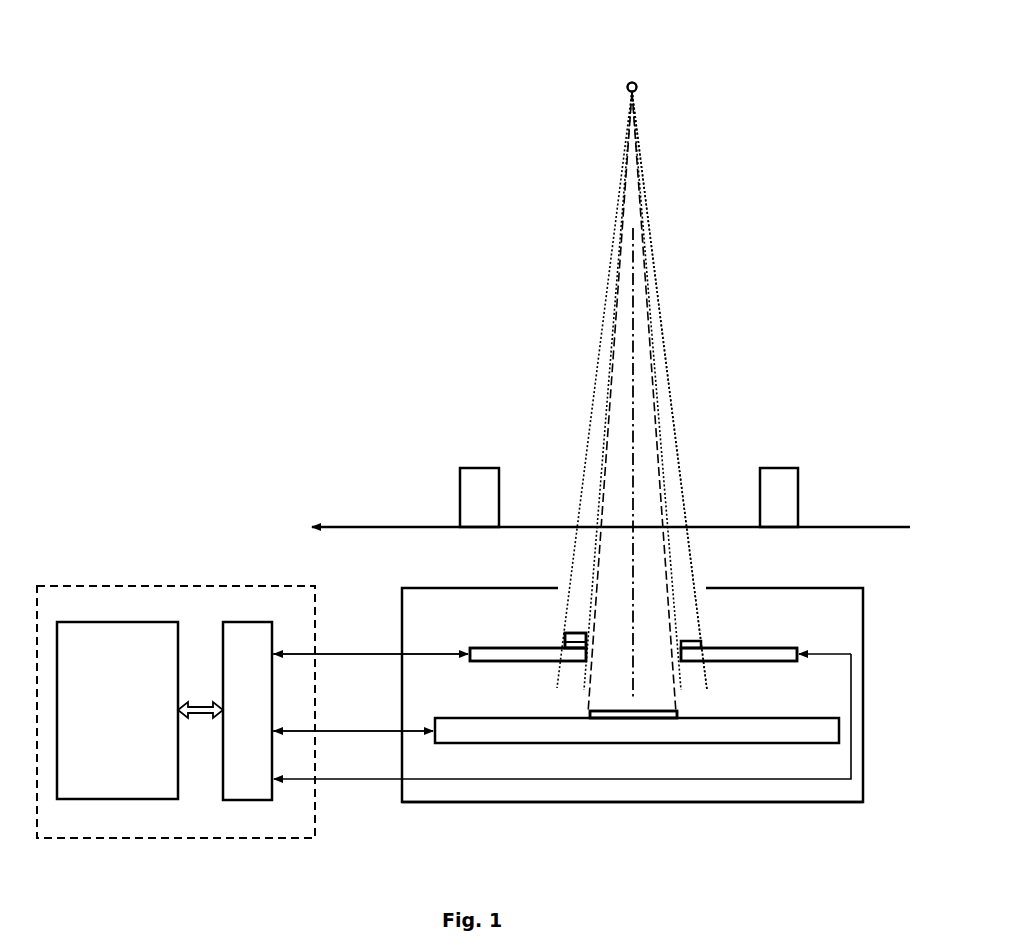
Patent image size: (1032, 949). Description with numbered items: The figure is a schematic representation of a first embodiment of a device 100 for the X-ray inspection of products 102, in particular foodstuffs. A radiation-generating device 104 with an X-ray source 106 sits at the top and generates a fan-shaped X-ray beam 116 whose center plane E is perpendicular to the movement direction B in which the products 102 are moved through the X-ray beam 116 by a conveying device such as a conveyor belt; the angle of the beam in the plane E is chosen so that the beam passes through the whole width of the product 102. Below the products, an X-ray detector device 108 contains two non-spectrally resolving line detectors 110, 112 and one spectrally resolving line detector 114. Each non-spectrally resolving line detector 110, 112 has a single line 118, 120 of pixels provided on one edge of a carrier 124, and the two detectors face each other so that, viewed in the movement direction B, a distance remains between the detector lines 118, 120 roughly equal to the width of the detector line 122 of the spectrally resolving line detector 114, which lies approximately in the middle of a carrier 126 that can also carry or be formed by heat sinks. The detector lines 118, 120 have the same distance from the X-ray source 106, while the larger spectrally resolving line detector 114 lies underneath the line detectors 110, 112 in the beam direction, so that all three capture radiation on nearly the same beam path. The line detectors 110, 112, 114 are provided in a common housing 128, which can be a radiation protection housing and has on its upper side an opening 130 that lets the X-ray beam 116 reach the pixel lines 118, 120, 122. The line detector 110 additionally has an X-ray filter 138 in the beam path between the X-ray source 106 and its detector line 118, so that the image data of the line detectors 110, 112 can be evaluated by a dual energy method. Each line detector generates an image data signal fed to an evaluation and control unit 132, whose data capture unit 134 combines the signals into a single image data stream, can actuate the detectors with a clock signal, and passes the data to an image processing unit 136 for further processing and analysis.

The device for the X-ray inspection of products 100 is at (430, 370).
The products 102 is at (484, 481).
The radiation-generating device 104 is at (586, 96).
The X-ray source 106 is at (633, 82).
The X-ray detector device 108 is at (686, 812).
The non-spectrally resolving line detector 110 is at (504, 646).
The non-spectrally resolving line detector 112 is at (776, 646).
The spectrally resolving line detector 114 is at (731, 718).
The X-ray beam 116 is at (606, 310).
The line of pixels 118 is at (590, 640).
The line of pixels 120 is at (697, 640).
The line of pixels 122 is at (637, 710).
The carrier 124 is at (523, 661).
The carrier 126 is at (640, 731).
The housing 128 is at (815, 804).
The opening 130 is at (688, 590).
The evaluation and control unit 132 is at (217, 838).
The data capture unit 134 is at (247, 711).
The image processing unit 136 is at (117, 710).
The X-ray filter 138 is at (570, 632).
The movement direction B is at (611, 507).
The center plane E is at (636, 400).